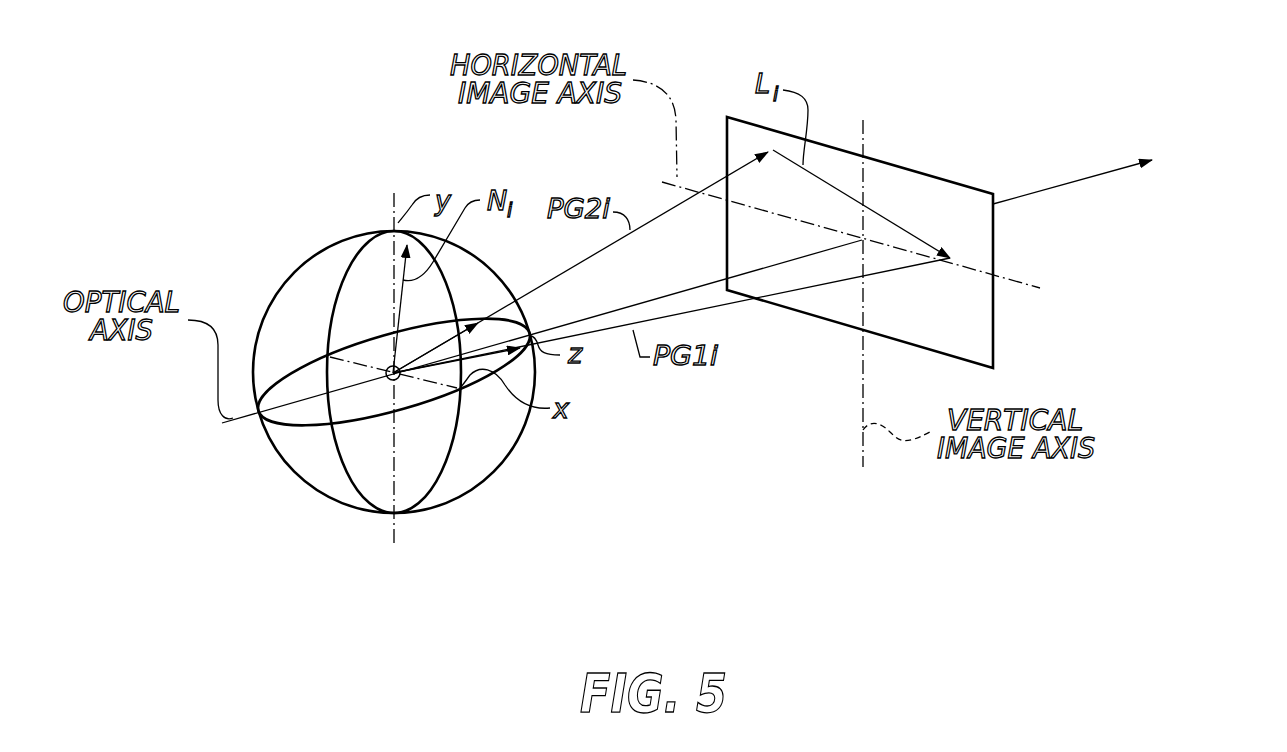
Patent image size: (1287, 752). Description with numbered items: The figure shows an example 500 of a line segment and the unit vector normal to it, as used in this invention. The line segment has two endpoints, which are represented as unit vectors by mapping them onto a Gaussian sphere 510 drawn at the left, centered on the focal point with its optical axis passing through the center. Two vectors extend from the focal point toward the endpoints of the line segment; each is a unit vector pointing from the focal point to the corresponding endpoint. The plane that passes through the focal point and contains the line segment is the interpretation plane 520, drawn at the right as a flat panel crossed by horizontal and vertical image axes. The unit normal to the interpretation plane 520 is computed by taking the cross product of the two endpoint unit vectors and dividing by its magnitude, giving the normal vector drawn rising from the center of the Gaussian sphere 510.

The example of a line segment and a unit vector normal 500 is at (387, 608).
The Gaussian sphere 510 is at (320, 250).
The interpretation plane 520 is at (960, 210).